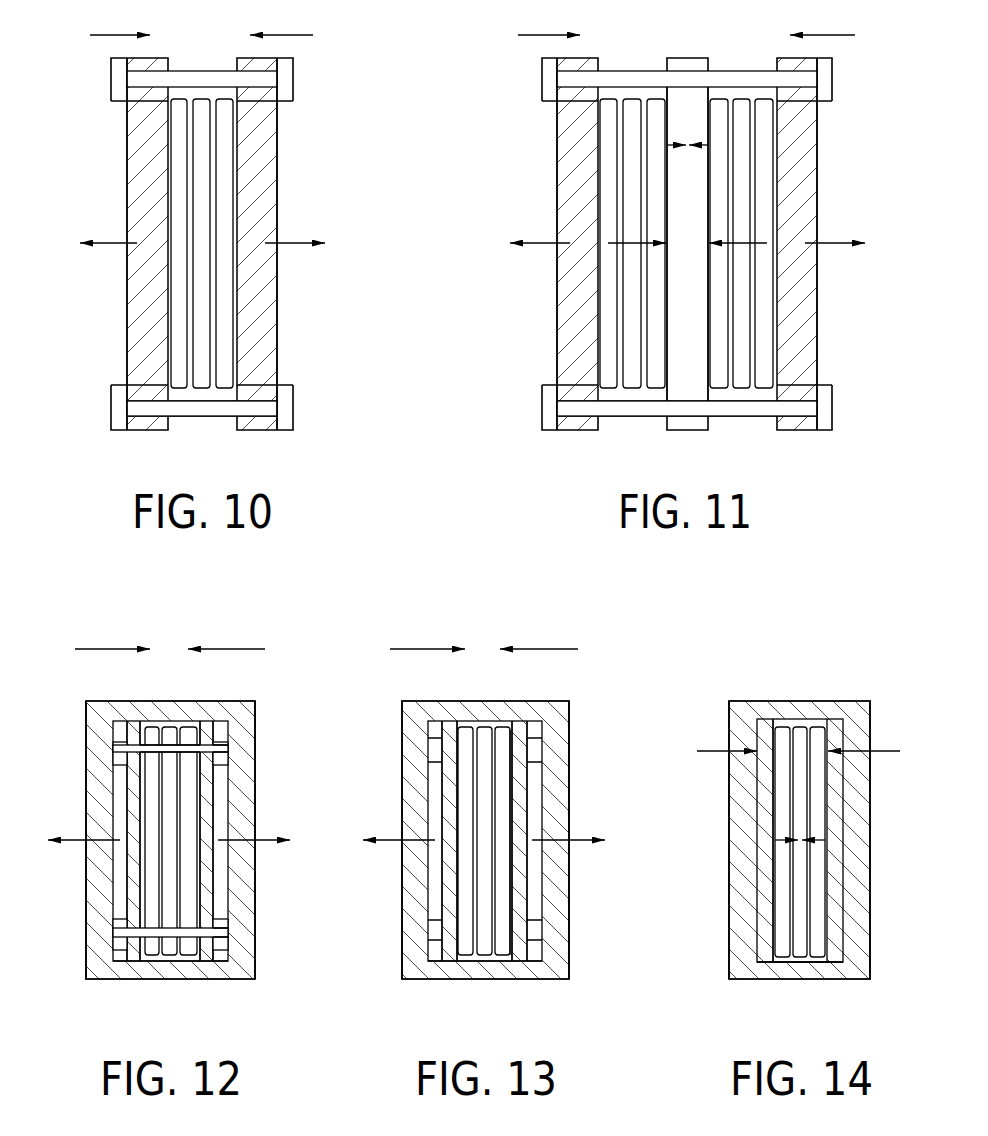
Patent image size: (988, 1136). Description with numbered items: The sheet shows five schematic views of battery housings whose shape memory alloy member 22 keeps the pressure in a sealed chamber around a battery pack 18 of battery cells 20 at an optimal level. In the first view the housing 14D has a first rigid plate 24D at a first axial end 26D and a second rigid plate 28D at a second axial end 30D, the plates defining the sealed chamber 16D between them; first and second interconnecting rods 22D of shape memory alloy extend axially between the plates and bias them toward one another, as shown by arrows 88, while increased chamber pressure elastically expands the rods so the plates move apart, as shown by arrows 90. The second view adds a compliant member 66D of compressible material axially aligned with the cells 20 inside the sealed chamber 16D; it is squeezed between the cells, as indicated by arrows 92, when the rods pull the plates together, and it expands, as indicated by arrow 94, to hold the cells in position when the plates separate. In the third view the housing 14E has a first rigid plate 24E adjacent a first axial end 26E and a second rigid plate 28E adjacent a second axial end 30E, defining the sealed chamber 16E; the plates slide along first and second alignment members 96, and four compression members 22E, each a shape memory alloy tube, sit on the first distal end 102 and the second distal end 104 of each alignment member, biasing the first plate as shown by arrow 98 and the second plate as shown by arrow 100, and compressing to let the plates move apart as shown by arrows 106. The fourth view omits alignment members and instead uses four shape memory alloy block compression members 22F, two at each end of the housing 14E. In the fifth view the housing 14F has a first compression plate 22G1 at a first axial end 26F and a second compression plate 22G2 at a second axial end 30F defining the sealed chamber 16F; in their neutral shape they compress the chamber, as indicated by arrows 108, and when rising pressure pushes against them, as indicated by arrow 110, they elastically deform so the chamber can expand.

In FIG. 10, the housing 14D is at (277, 168).
In FIG. 11, the housing 14D is at (557, 328).
In FIG. 12, the housing 14E is at (86, 940).
In FIG. 13, the housing 14E is at (402, 940).
In FIG. 14, the housing 14F is at (729, 935).
In FIG. 10, the sealed chamber 16D is at (204, 393).
In FIG. 11, the sealed chamber 16D is at (733, 393).
In FIG. 12, the sealed chamber 16E is at (170, 965).
In FIG. 13, the sealed chamber 16E is at (486, 965).
In FIG. 14, the sealed chamber 16F is at (797, 962).
In FIG. 10, the battery pack 18 is at (237, 338).
In FIG. 11, the battery pack 18 is at (777, 325).
In FIG. 12, the battery pack 18 is at (200, 780).
In FIG. 13, the battery pack 18 is at (512, 780).
In FIG. 14, the battery pack 18 is at (775, 809).
In FIG. 10, the battery cells 20 is at (223, 377).
In FIG. 11, the battery cells 20 is at (765, 377).
In FIG. 12, the battery cells 20 is at (188, 912).
In FIG. 13, the battery cells 20 is at (500, 912).
In FIG. 14, the battery cells 20 is at (815, 905).
In FIG. 10, the shape memory alloy member 22 is at (188, 231).
In FIG. 11, the shape memory alloy member 22 is at (682, 240).
In FIG. 12, the shape memory alloy member 22 is at (172, 837).
In FIG. 13, the shape memory alloy member 22 is at (487, 837).
In FIG. 14, the shape memory alloy member 22 is at (751, 837).
In FIG. 10, the interconnecting rods 22D is at (204, 78).
In FIG. 11, the interconnecting rods 22D is at (732, 78).
In FIG. 12, the compression members 22E is at (120, 738).
In FIG. 13, the compression members 22E is at (435, 738).
In FIG. 13, the compression members 22F is at (487, 837).
In FIG. 14, the first compression plate 22G1 is at (835, 733).
In FIG. 14, the second compression plate 22G2 is at (765, 955).
In FIG. 10, the first rigid plate 24D is at (260, 270).
In FIG. 11, the first rigid plate 24D is at (797, 147).
In FIG. 12, the first rigid plate 24E is at (207, 790).
In FIG. 13, the first rigid plate 24E is at (520, 790).
In FIG. 10, the first axial end 26D is at (277, 228).
In FIG. 11, the first axial end 26D is at (818, 227).
In FIG. 12, the first axial end 26E is at (240, 833).
In FIG. 13, the first axial end 26E is at (555, 833).
In FIG. 14, the first axial end 26F is at (855, 835).
In FIG. 10, the second rigid plate 28D is at (143, 136).
In FIG. 11, the second rigid plate 28D is at (573, 140).
In FIG. 12, the second rigid plate 28E is at (133, 778).
In FIG. 13, the second rigid plate 28E is at (448, 778).
In FIG. 10, the second axial end 30D is at (127, 213).
In FIG. 11, the second axial end 30D is at (557, 213).
In FIG. 12, the second axial end 30E is at (100, 828).
In FIG. 13, the second axial end 30E is at (415, 828).
In FIG. 14, the second axial end 30F is at (743, 845).
In FIG. 11, the compliant member 66D is at (687, 345).
In FIG. 10, the arrows 88 is at (107, 35).
In FIG. 11, the arrows 88 is at (542, 35).
In FIG. 10, the arrows 90 is at (114, 243).
In FIG. 11, the arrows 90 is at (543, 243).
In FIG. 11, the arrows 92 is at (740, 250).
In FIG. 11, the arrow 94 is at (683, 140).
In FIG. 12, the alignment members 96 is at (190, 750).
In FIG. 13, the alignment members 96 is at (505, 750).
In FIG. 12, the arrow 98 is at (238, 649).
In FIG. 13, the arrow 98 is at (555, 649).
In FIG. 12, the arrow 100 is at (102, 649).
In FIG. 13, the arrow 100 is at (418, 649).
In FIG. 12, the first distal end 102 is at (225, 748).
In FIG. 12, the second distal end 104 is at (118, 748).
In FIG. 13, the second distal end 104 is at (435, 748).
In FIG. 12, the arrows 106 is at (80, 840).
In FIG. 13, the arrows 106 is at (395, 840).
In FIG. 14, the arrows 108 is at (722, 751).
In FIG. 14, the arrow 110 is at (800, 848).